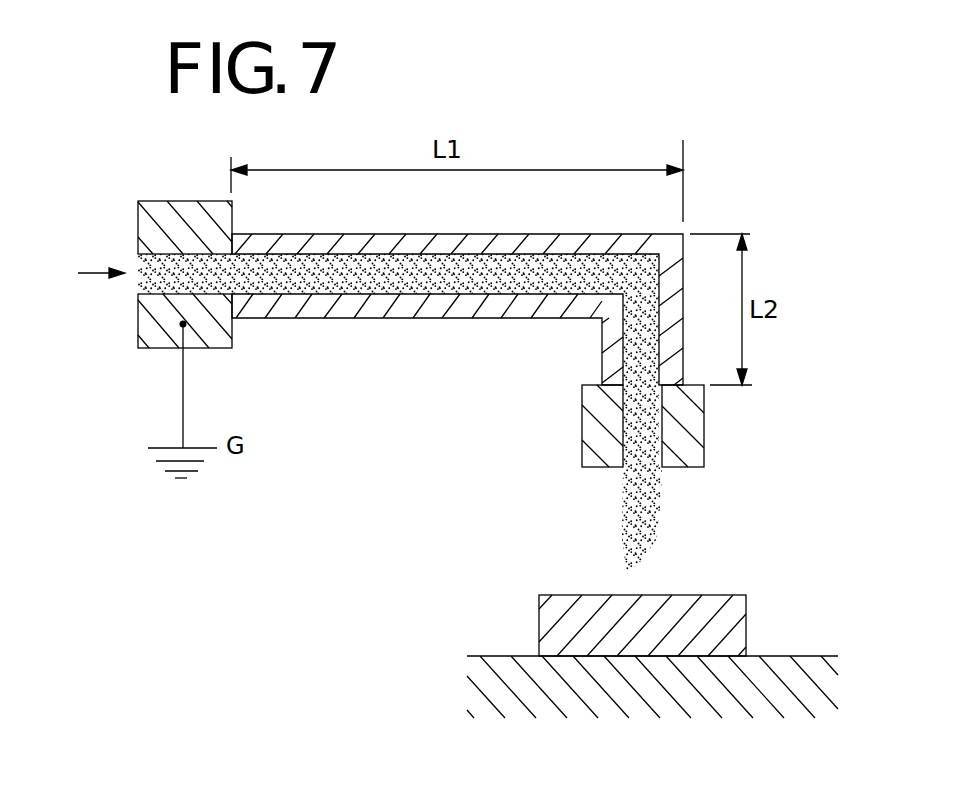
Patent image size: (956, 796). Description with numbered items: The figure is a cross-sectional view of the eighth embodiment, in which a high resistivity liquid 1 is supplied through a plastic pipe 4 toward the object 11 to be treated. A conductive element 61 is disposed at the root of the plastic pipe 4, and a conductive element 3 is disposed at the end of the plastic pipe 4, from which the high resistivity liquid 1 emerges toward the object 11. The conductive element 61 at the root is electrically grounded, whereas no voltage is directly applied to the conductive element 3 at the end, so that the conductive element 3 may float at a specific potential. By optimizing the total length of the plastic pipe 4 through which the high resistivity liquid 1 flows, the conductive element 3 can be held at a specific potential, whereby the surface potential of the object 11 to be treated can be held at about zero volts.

The conductive element 61 is at (150, 327).
The plastic pipe 4 is at (377, 305).
The conductive element 3 is at (690, 432).
The high resistivity liquid 1 is at (632, 508).
The object to be treated 11 is at (730, 612).